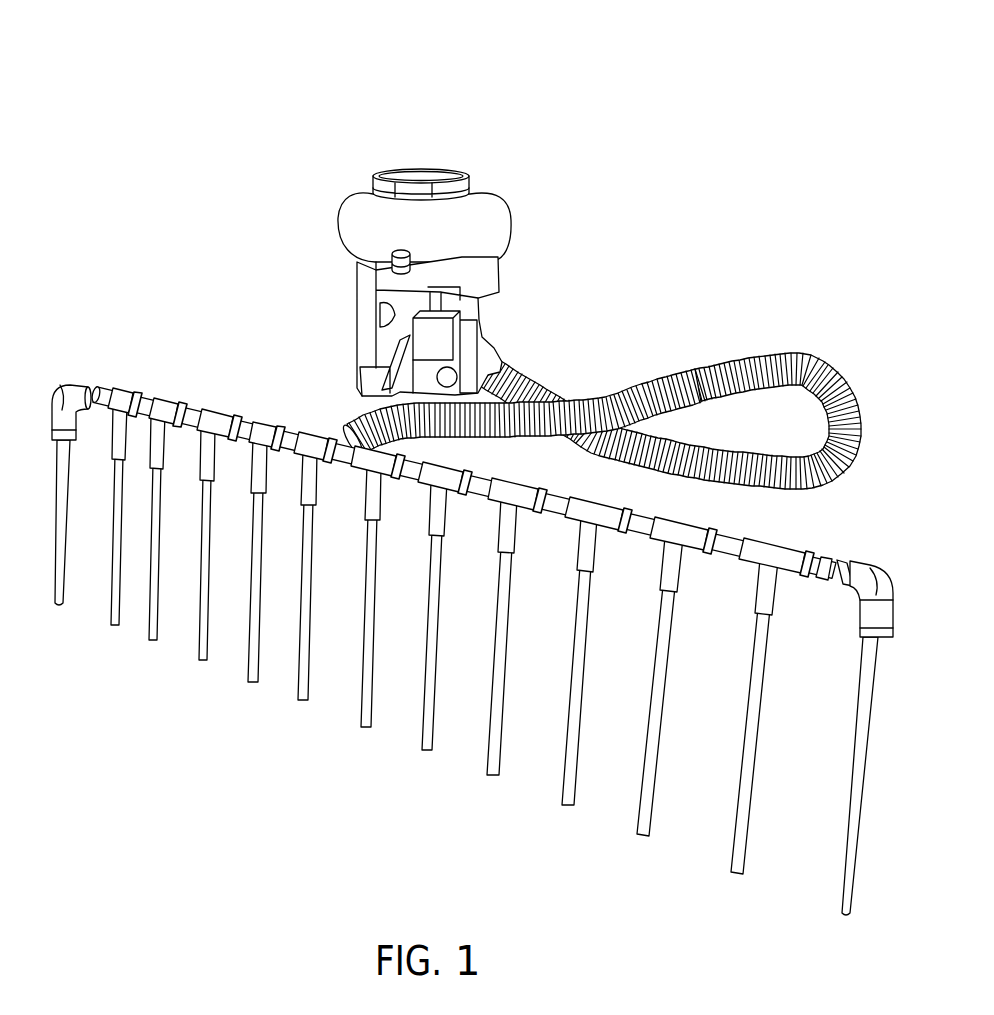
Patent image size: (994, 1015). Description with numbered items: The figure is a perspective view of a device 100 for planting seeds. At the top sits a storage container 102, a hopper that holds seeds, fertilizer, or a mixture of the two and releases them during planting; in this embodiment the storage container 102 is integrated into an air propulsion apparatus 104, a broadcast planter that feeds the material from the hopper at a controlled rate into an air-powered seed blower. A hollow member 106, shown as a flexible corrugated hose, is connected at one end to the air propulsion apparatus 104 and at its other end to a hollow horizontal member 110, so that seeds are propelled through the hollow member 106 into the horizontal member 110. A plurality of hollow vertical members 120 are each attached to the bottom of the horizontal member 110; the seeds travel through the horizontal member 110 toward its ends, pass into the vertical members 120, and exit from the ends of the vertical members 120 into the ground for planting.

The device for planting seeds 100 is at (414, 78).
The storage container 102 is at (494, 194).
The air propulsion apparatus 104 is at (498, 276).
The hollow member 106 is at (802, 358).
The horizontal member 110 is at (168, 400).
The vertical members 120 is at (65, 560).